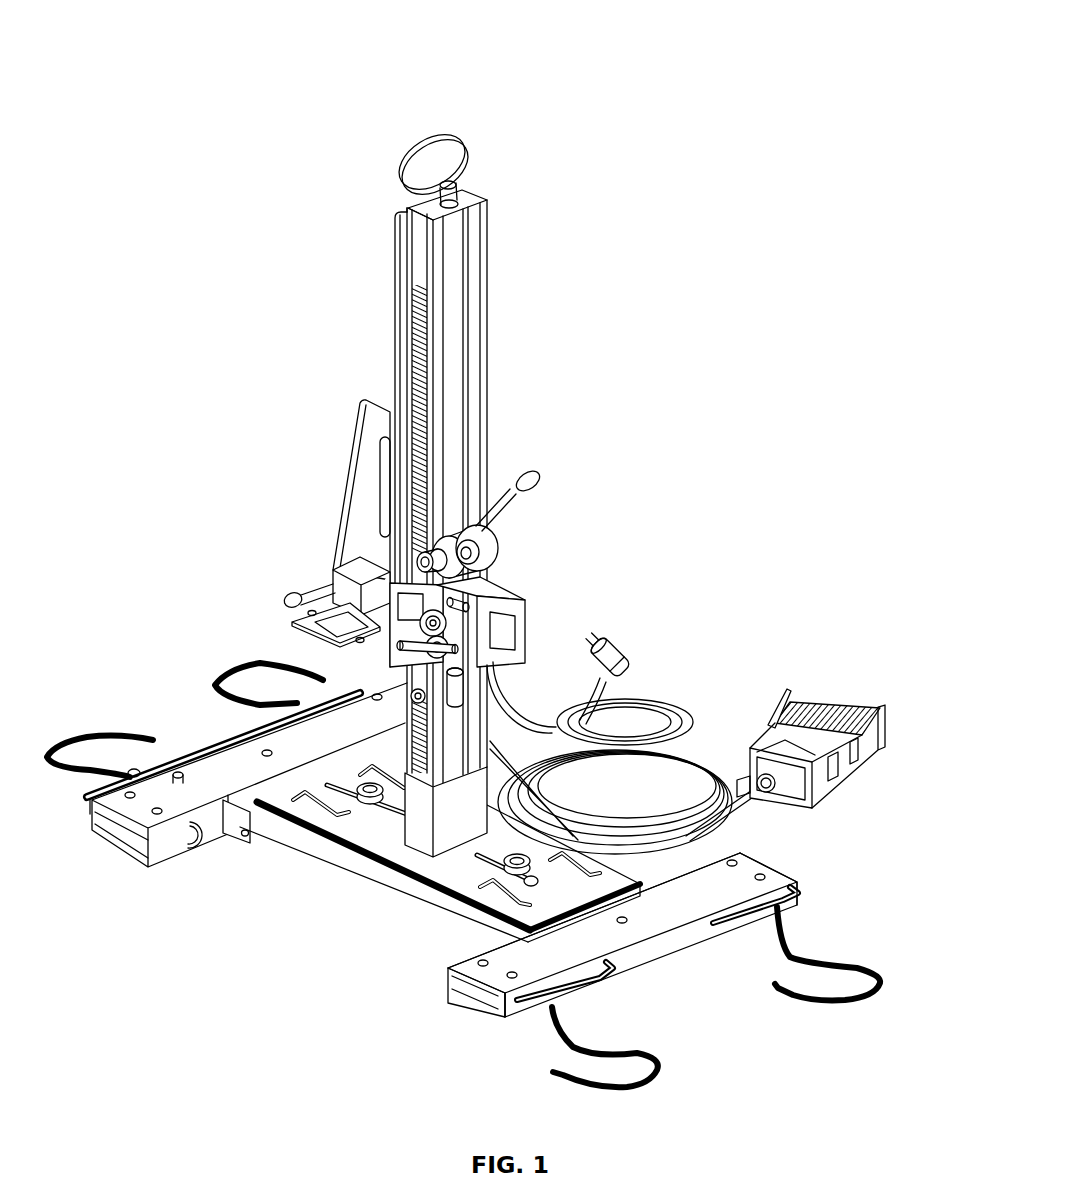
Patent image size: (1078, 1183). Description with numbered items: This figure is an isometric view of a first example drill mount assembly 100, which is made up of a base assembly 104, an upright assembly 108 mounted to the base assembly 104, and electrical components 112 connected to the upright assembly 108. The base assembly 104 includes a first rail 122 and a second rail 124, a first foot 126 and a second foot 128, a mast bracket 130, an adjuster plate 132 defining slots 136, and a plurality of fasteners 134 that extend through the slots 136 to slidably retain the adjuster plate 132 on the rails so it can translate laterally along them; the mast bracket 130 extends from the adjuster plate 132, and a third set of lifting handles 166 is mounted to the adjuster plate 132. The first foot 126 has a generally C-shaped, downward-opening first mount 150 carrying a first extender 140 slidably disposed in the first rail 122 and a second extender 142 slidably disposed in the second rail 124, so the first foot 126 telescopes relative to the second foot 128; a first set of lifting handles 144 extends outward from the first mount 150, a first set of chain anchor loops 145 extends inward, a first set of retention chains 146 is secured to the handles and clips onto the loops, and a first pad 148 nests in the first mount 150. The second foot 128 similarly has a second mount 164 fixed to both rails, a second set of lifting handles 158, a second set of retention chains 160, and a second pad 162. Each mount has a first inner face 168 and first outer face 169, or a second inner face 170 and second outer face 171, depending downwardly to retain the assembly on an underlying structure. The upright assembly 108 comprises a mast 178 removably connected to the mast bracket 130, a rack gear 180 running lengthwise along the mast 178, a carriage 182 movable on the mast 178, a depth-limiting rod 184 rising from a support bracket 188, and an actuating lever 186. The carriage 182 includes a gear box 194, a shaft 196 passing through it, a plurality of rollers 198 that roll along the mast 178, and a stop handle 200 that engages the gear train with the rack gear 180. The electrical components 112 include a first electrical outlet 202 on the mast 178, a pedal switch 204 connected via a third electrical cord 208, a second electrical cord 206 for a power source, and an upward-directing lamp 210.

The drill mount assembly 100 is at (200, 32).
The base assembly 104 is at (225, 952).
The upright assembly 108 is at (372, 250).
The electrical components 112 is at (808, 828).
The first rail 122 is at (383, 887).
The second rail 124 is at (648, 880).
The first foot 126 is at (113, 803).
The second foot 128 is at (553, 950).
The mast bracket 130 is at (397, 883).
The adjuster plate 132 is at (283, 823).
The plurality of fasteners 134 is at (440, 875).
The slots 136 is at (340, 830).
The first extender 140 is at (233, 797).
The second extender 142 is at (277, 723).
The first set of lifting handles 144 is at (135, 770).
The first set of chain anchor loops 145 is at (183, 838).
The first set of retention chains 146 is at (253, 667).
The first pad 148 is at (130, 833).
The first mount 150 is at (180, 773).
The second set of lifting handles 158 is at (547, 1010).
The second set of retention chains 160 is at (843, 1000).
The second pad 162 is at (483, 997).
The second mount 164 is at (617, 960).
The third set of lifting handles 166 is at (570, 853).
The first inner face 168 is at (180, 852).
The first outer face 169 is at (90, 808).
The second inner face 170 is at (447, 1003).
The second outer face 171 is at (790, 887).
The mast 178 is at (455, 262).
The rack gear 180 is at (413, 328).
The carriage 182 is at (512, 515).
The depth-limiting rod 184 is at (398, 222).
The actuating lever 186 is at (535, 478).
The support bracket 188 is at (360, 593).
The gear box 194 is at (415, 565).
The shaft 196 is at (497, 665).
The plurality of rollers 198 is at (490, 558).
The stop handle 200 is at (492, 598).
The first electrical outlet 202 is at (522, 672).
The pedal switch 204 is at (875, 730).
The second electrical cord 206 is at (640, 697).
The third electrical cord 208 is at (705, 818).
The lamp 210 is at (410, 170).